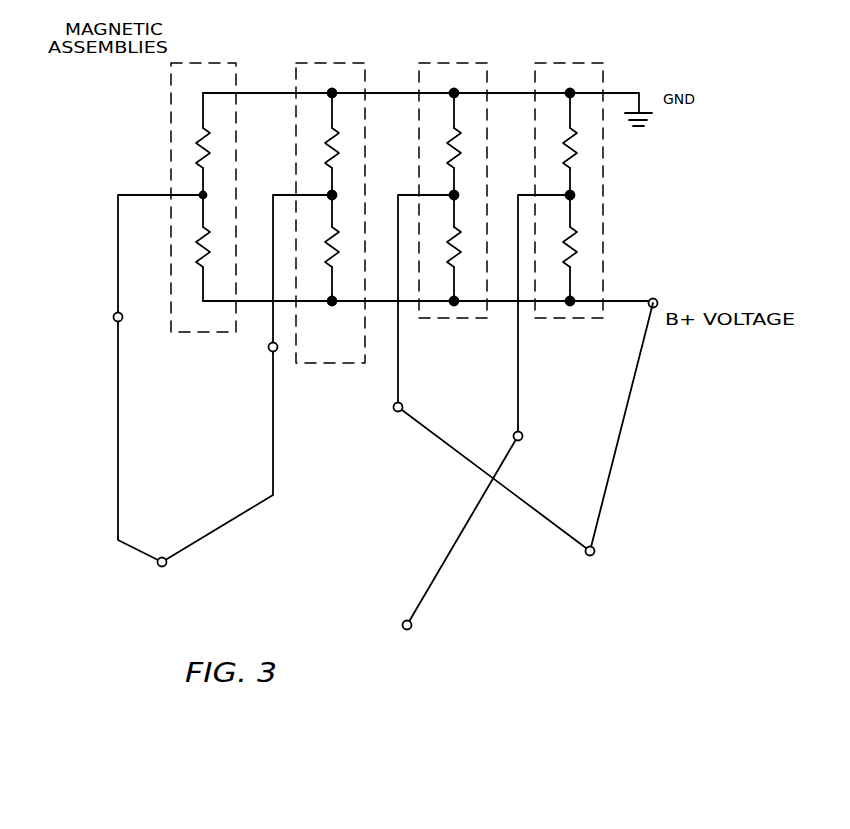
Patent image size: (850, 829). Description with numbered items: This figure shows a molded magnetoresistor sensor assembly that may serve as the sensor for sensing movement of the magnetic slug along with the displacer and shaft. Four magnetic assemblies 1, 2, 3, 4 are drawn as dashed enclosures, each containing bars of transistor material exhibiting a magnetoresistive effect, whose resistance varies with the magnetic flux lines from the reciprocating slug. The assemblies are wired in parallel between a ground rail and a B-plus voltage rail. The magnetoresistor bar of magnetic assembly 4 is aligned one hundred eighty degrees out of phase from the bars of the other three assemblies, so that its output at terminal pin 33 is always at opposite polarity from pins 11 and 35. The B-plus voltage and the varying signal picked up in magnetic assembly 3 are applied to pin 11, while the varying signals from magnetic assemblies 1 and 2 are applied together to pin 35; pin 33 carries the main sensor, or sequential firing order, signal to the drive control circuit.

The magnetic assembly # 1 is at (203, 185).
The magnetic assembly # 2 is at (330, 200).
The magnetic assembly # 3 is at (453, 178).
The magnetic assembly # 4 is at (569, 178).
The terminal pin 11 is at (524, 378).
The terminal pin 33 is at (482, 423).
The terminal pin 35 is at (198, 385).